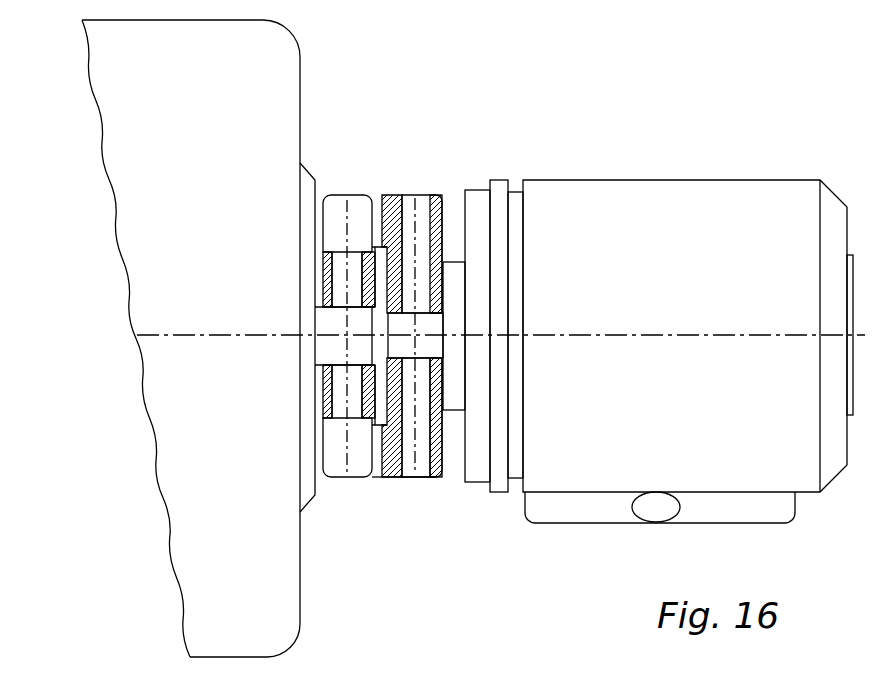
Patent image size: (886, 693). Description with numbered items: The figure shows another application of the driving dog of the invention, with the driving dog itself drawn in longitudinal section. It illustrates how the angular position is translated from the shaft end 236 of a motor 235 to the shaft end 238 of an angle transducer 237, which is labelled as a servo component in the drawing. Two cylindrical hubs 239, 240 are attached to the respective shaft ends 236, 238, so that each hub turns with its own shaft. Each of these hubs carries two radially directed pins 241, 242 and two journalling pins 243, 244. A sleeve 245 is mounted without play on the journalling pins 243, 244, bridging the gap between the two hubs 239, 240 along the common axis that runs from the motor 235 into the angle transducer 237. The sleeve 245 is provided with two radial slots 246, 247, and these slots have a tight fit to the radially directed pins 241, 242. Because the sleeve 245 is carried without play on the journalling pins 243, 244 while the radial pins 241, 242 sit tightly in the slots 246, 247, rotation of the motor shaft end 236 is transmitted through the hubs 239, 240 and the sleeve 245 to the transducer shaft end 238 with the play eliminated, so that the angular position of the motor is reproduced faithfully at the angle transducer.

The motor 235 is at (210, 89).
The shaft end of motor 236 is at (335, 353).
The angle transducer 237 is at (750, 249).
The shaft end of angle transducer 238 is at (433, 347).
The cylindrical hub 239 is at (335, 398).
The cylindrical hub 240 is at (438, 418).
The radially directed pin 241 is at (333, 235).
The radially directed pin 242 is at (335, 443).
The journalling pin 243 is at (425, 227).
The journalling pin 244 is at (427, 477).
The sleeve 245 is at (396, 197).
The radial slot 246 is at (373, 198).
The radial slot 247 is at (373, 477).